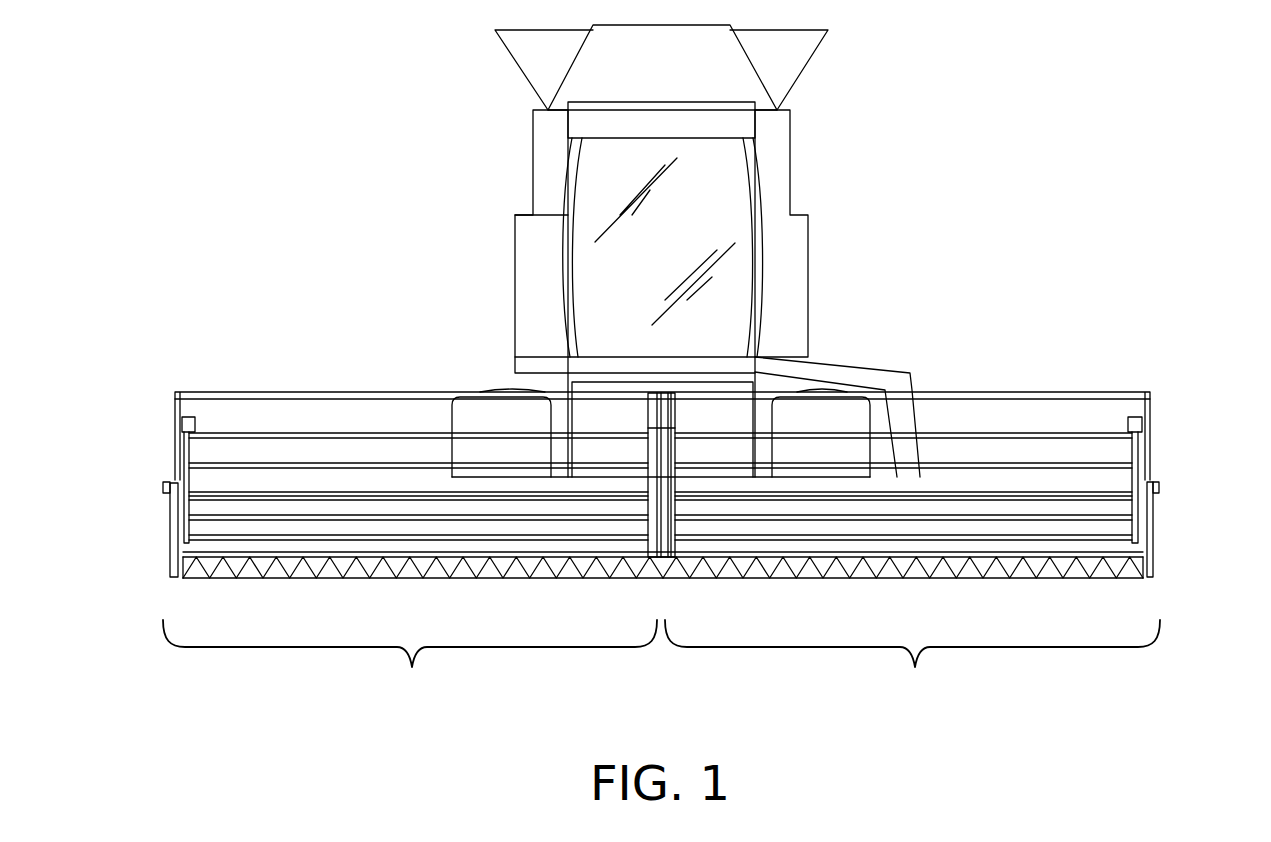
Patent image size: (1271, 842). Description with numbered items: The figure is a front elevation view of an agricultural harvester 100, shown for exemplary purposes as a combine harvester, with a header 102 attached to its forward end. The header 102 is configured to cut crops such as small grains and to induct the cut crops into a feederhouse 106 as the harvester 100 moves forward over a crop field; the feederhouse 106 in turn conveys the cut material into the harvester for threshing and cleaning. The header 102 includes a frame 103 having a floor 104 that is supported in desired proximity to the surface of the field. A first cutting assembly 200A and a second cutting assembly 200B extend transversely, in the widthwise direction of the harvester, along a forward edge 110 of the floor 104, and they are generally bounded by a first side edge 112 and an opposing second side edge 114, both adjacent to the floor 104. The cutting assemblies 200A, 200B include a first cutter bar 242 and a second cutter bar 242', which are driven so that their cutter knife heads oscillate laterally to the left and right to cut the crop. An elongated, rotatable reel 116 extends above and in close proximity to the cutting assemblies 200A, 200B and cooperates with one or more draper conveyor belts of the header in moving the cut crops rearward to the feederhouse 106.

The agricultural harvester 100 is at (471, 178).
The header 102 is at (154, 383).
The frame 103 is at (312, 392).
The floor 104 is at (365, 555).
The feederhouse 106 is at (710, 400).
The forward edge 110 is at (350, 578).
The first side edge 112 is at (170, 550).
The second side edge 114 is at (1153, 552).
The rotatable reel 116 is at (970, 495).
The first cutter bar 242 is at (423, 599).
The second cutter bar 242' is at (903, 599).
The first cutting assembly 200A is at (912, 660).
The second cutting assembly 200B is at (410, 660).